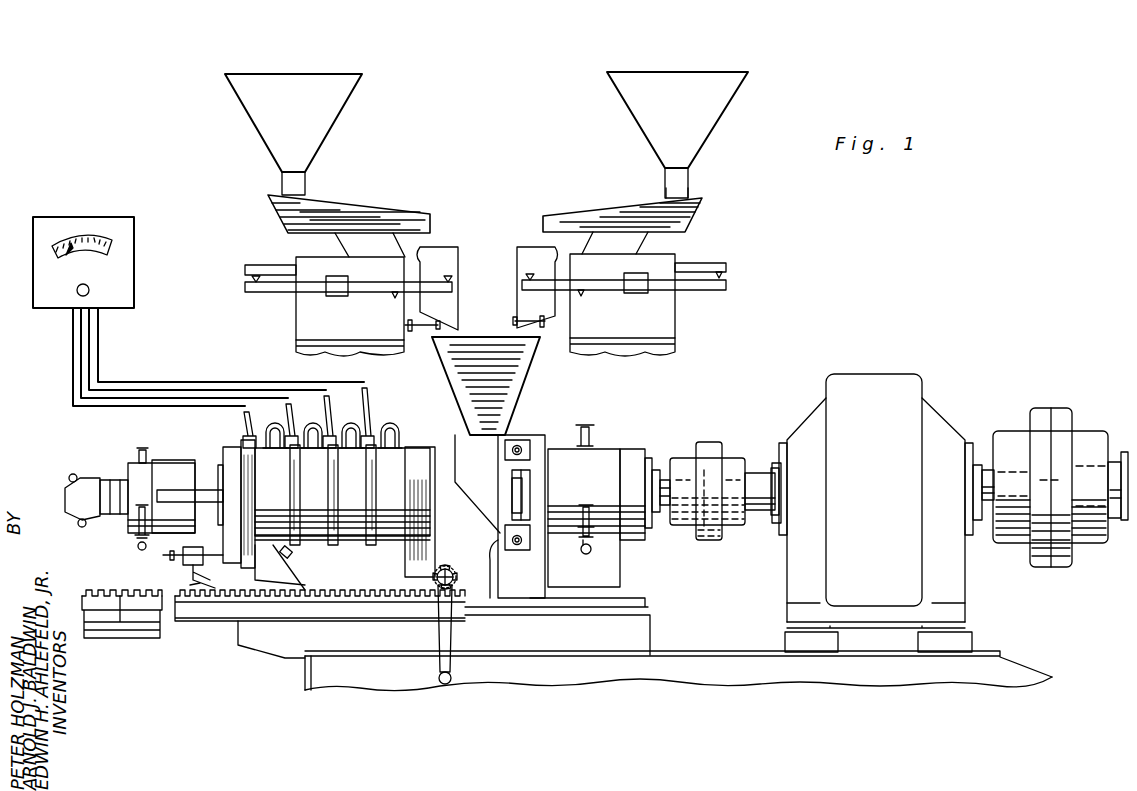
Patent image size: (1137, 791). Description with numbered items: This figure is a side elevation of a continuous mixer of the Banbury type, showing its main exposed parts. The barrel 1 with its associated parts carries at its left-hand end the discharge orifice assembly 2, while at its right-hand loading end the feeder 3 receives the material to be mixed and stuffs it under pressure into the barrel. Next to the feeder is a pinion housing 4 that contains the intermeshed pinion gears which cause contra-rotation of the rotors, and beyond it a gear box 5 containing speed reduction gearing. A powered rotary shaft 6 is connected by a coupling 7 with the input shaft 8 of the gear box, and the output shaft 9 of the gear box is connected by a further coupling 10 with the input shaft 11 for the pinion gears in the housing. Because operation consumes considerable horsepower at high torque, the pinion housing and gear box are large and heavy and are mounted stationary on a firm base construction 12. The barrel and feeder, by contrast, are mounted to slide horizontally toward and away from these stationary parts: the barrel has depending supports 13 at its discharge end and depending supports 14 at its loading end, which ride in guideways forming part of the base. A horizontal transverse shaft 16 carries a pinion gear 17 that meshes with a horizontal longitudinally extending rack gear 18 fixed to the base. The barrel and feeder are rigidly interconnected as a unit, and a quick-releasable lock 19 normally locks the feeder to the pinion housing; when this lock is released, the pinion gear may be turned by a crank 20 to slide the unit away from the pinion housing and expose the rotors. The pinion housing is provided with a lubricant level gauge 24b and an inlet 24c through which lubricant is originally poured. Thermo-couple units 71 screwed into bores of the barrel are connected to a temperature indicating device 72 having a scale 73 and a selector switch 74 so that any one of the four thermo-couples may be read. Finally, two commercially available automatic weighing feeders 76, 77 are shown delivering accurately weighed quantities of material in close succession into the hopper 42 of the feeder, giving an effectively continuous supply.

The barrel 1 is at (355, 545).
The discharge orifice assembly 2 is at (208, 551).
The feeder 3 is at (457, 534).
The pinion housing 4 is at (654, 446).
The gear box 5 is at (934, 398).
The powered rotary shaft 6 is at (1118, 448).
The coupling 7 is at (1054, 400).
The input shaft 8 is at (990, 505).
The output shaft 9 is at (755, 512).
The coupling 10 is at (722, 446).
The input shaft 11 is at (667, 520).
The base construction 12 is at (720, 643).
The depending supports 13 is at (300, 578).
The depending supports 14 is at (425, 553).
The horizontal transverse shaft 16 is at (452, 568).
The pinion gear 17 is at (437, 577).
The rack gear 18 is at (360, 592).
The quick-releasable lock 19 is at (505, 496).
The crank 20 is at (453, 632).
The lubricant level gauge 24b is at (588, 503).
The inlet 24c is at (593, 438).
The hopper 42 is at (516, 372).
The thermo-couple units 71 is at (372, 410).
The temperature indicating device 72 is at (134, 262).
The scale 73 is at (84, 242).
The selector switch 74 is at (89, 290).
The automatic weighing feeder 76 is at (410, 203).
The automatic weighing feeder 77 is at (596, 206).